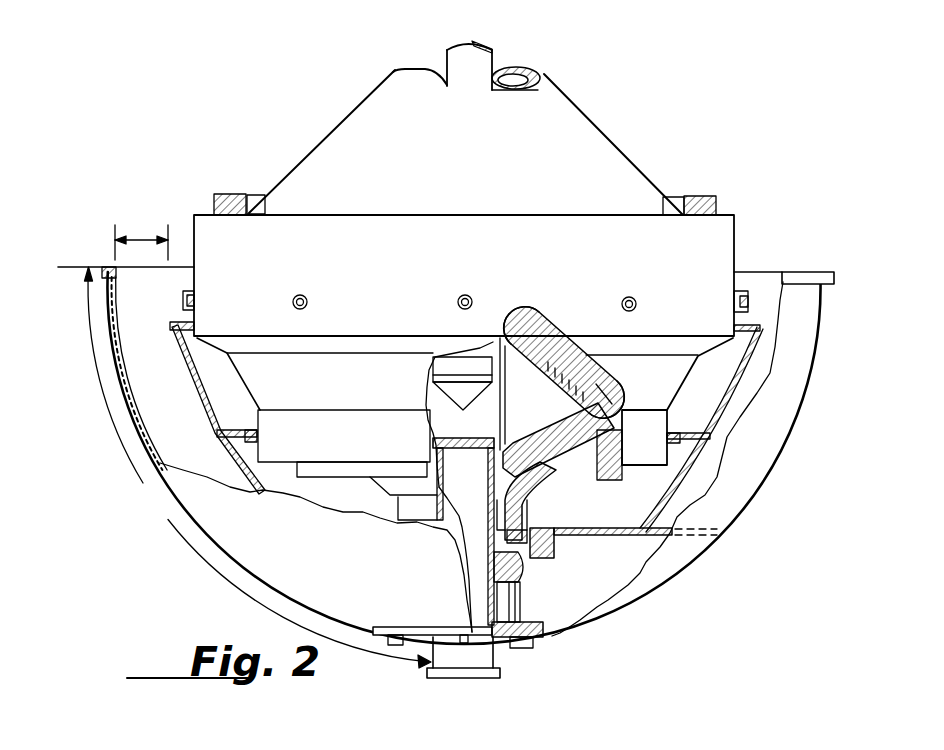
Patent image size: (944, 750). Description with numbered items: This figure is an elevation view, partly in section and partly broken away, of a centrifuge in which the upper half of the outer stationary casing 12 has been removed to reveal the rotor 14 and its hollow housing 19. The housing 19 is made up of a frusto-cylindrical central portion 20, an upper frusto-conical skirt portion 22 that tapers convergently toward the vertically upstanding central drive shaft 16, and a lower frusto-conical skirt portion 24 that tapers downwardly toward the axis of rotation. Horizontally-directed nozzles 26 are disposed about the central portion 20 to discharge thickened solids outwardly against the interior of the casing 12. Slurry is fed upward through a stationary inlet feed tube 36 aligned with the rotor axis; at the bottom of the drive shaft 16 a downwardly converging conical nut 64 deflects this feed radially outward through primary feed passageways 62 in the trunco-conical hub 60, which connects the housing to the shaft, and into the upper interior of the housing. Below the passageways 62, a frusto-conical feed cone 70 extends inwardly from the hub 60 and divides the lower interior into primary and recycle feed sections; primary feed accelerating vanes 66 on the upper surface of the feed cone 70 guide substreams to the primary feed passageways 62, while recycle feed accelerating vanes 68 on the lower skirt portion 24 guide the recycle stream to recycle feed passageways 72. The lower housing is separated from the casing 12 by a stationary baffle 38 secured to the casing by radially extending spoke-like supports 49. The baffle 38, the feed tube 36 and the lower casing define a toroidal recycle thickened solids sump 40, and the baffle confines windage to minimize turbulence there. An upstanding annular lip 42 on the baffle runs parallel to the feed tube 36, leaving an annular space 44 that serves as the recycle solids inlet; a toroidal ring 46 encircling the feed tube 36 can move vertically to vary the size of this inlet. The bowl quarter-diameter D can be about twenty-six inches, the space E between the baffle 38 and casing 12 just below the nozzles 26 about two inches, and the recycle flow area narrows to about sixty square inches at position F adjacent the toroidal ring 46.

The outer stationary casing 12 is at (110, 330).
The rotor 14 is at (537, 62).
The central drive shaft 16 is at (467, 65).
The hollow housing 19 is at (634, 165).
The frusto-cylindrical central portion 20 is at (709, 260).
The upper frusto-conical skirt portion 22 is at (542, 135).
The lower frusto-conical skirt portion 24 is at (263, 383).
The nozzles 26 is at (194, 295).
The inlet feed tube 36 is at (463, 472).
The stationary baffle 38 is at (750, 373).
The recycle thickened solids sump 40 is at (605, 557).
The upstanding annular lip 42 is at (517, 547).
The annular space 44 is at (488, 560).
The toroidal ring 46 is at (487, 572).
The spoke-like supports 49 is at (677, 510).
The trunco-conical hub 60 is at (540, 320).
The primary feed passageways 62 is at (573, 380).
The conical nut 64 is at (462, 408).
The primary feed accelerating vanes 66 is at (522, 317).
The recycle feed accelerating vanes 68 is at (550, 458).
The frusto-conical feed cone 70 is at (543, 432).
The recycle feed passageways 72 is at (605, 400).
The bowl quarter-diameter D is at (258, 467).
The space between baffle and casing E is at (143, 235).
The position of recycle solids flow area F is at (575, 587).